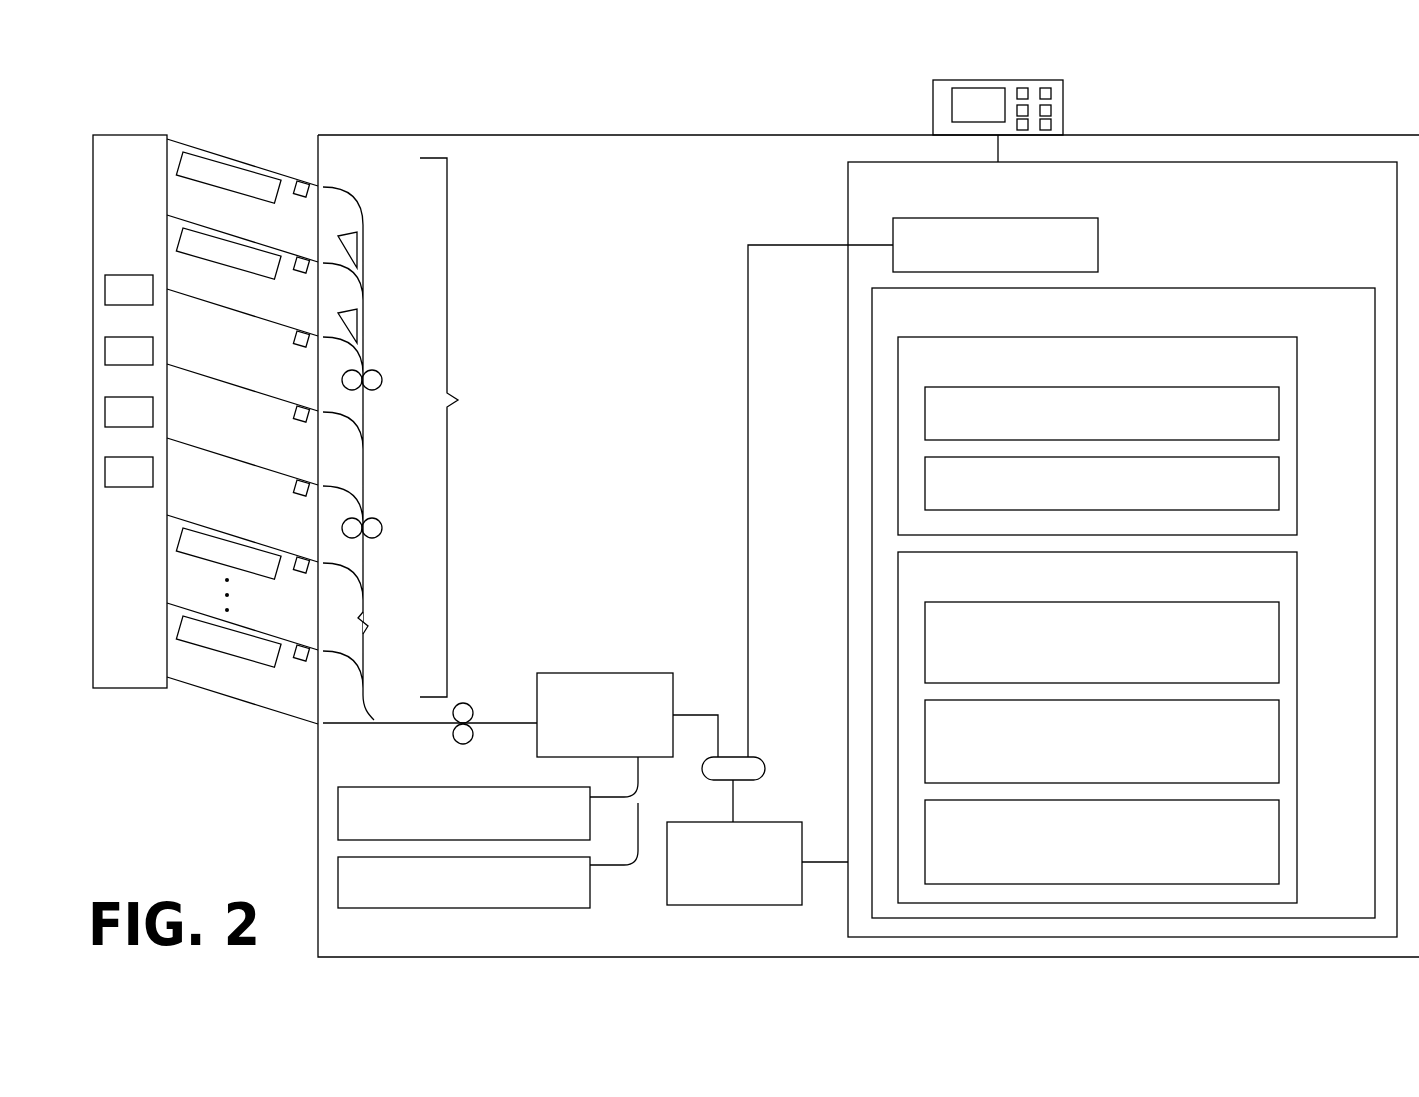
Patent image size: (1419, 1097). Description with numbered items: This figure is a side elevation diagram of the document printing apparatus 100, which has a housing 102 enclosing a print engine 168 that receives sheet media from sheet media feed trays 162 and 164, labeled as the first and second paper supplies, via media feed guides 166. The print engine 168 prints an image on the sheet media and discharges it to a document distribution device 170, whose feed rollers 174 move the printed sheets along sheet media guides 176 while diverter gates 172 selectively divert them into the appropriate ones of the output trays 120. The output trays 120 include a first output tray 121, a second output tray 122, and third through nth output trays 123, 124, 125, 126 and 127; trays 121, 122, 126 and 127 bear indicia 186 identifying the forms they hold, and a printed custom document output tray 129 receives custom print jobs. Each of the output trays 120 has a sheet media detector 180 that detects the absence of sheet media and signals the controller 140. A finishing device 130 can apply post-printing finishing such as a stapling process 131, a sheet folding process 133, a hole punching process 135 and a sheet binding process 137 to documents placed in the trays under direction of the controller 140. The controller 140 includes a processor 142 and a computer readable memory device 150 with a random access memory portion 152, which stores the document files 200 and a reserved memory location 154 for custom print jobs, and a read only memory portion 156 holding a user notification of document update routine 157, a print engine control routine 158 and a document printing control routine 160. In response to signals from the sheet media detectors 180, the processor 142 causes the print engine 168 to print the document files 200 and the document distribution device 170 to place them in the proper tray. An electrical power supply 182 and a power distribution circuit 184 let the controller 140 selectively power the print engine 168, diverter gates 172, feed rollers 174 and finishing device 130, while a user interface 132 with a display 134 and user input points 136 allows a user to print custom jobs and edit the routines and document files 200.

The document printing apparatus 100 is at (1205, 90).
The housing 102 is at (453, 135).
The output trays 120 is at (233, 131).
The first output tray 121 is at (225, 156).
The second output tray 122 is at (181, 215).
The third output tray 123 is at (248, 313).
The fourth output tray 124 is at (205, 376).
The fifth output tray 125 is at (235, 459).
The sixth output tray 126 is at (207, 524).
The nth output tray 127 is at (250, 628).
The printed custom document output tray 129 is at (278, 712).
The finishing device 130 is at (113, 137).
The stapling process 131 is at (129, 290).
The user interface 132 is at (1063, 103).
The sheet folding process 133 is at (129, 351).
The display 134 is at (978, 96).
The hole punching process 135 is at (129, 412).
The user input points 136 is at (1045, 88).
The sheet binding process 137 is at (129, 472).
The controller 140 is at (846, 186).
The processor 142 is at (1098, 245).
The computer readable memory device 150 is at (1295, 290).
The random access memory portion 152 is at (1290, 342).
The reserved memory location for custom print jobs 154 is at (1279, 418).
The read only memory portion 156 is at (1290, 560).
The user notification of document update routine 157 is at (1279, 638).
The print engine control routine 158 is at (1279, 746).
The document printing control routine 160 is at (1279, 850).
The sheet media feed tray 162 is at (343, 799).
The sheet media feed tray 164 is at (343, 868).
The media feed guides 166 is at (640, 791).
The print engine 168 is at (622, 673).
The document distribution device 170 is at (463, 427).
The diverter gates 172 is at (358, 243).
The feed rollers 174 is at (383, 379).
The sheet media guides 176 is at (364, 265).
The sheet media detector 180 is at (301, 257).
The electrical power supply 182 is at (760, 830).
The power distribution circuit 184 is at (766, 766).
The indicia 186 is at (181, 163).
The document files 200 is at (1279, 488).